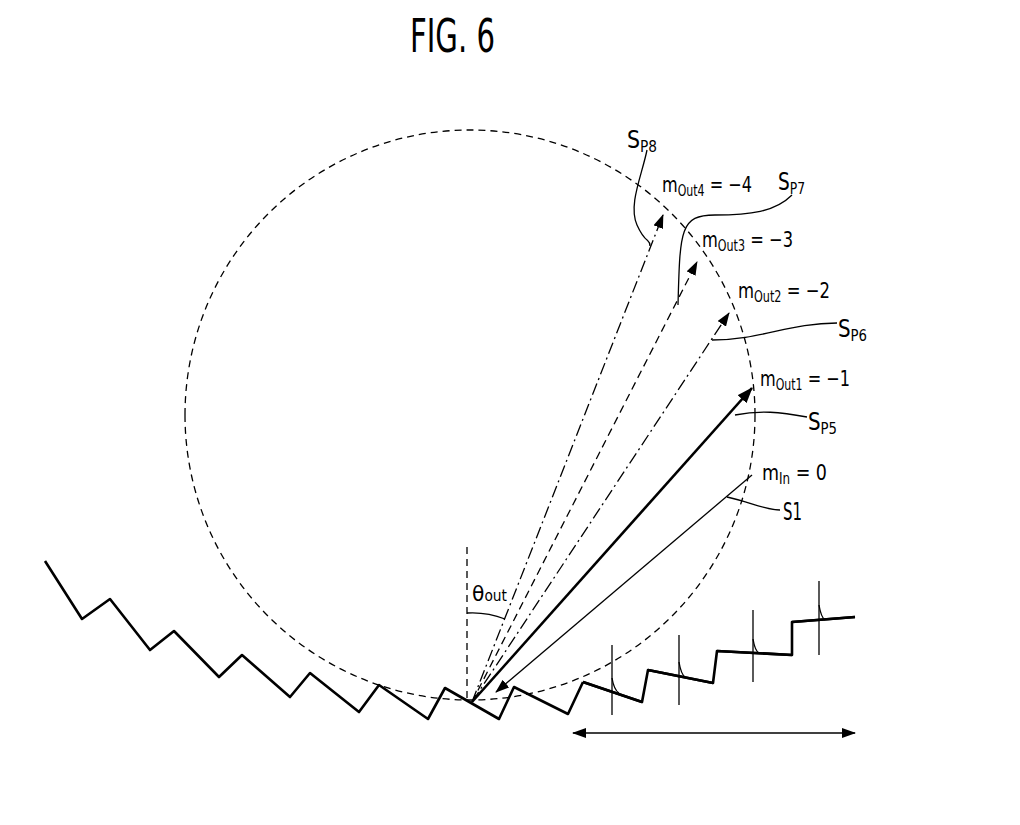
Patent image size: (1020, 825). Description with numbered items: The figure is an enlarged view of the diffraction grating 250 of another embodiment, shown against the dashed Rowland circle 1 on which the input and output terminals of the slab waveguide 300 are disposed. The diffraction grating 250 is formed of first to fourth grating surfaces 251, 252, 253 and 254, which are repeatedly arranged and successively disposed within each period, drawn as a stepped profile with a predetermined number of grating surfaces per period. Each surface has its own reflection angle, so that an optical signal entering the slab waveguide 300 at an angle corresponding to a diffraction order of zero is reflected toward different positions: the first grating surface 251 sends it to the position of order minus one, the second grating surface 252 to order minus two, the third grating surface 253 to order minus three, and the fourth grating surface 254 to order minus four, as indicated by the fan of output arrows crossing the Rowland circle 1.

The Rowland circle 1 is at (190, 388).
The slab waveguide 300 is at (285, 340).
The diffraction grating 250 is at (832, 578).
The first grating surface 251 is at (843, 619).
The second grating surface 252 is at (778, 657).
The third grating surface 253 is at (672, 675).
The fourth grating surface 254 is at (593, 688).